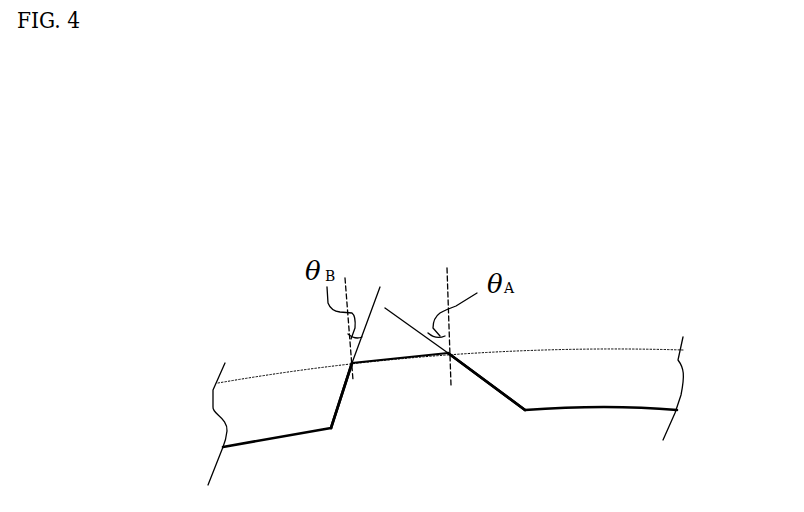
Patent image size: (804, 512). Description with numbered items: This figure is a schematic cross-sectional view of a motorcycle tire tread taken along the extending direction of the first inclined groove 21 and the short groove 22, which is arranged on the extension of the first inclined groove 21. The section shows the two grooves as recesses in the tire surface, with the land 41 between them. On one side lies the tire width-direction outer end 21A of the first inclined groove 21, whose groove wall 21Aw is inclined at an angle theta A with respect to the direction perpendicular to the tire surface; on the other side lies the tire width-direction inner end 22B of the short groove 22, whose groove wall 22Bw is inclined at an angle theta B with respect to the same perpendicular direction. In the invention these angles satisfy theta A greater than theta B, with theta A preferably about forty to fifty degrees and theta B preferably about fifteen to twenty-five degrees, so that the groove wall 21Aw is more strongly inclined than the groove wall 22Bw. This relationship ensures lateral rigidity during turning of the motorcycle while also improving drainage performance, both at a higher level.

The first inclined groove 21 is at (608, 363).
The tire width-direction outer end of the first inclined groove 21A is at (472, 338).
The groove wall of the tire width-direction outer end of the first inclined groove 21Aw is at (493, 383).
The short groove 22 is at (252, 398).
The tire width-direction inner end of the short groove 22B is at (328, 352).
The groove wall of the tire width-direction inner end of the short groove 22Bw is at (338, 405).
The tooth tip land 41 is at (392, 357).